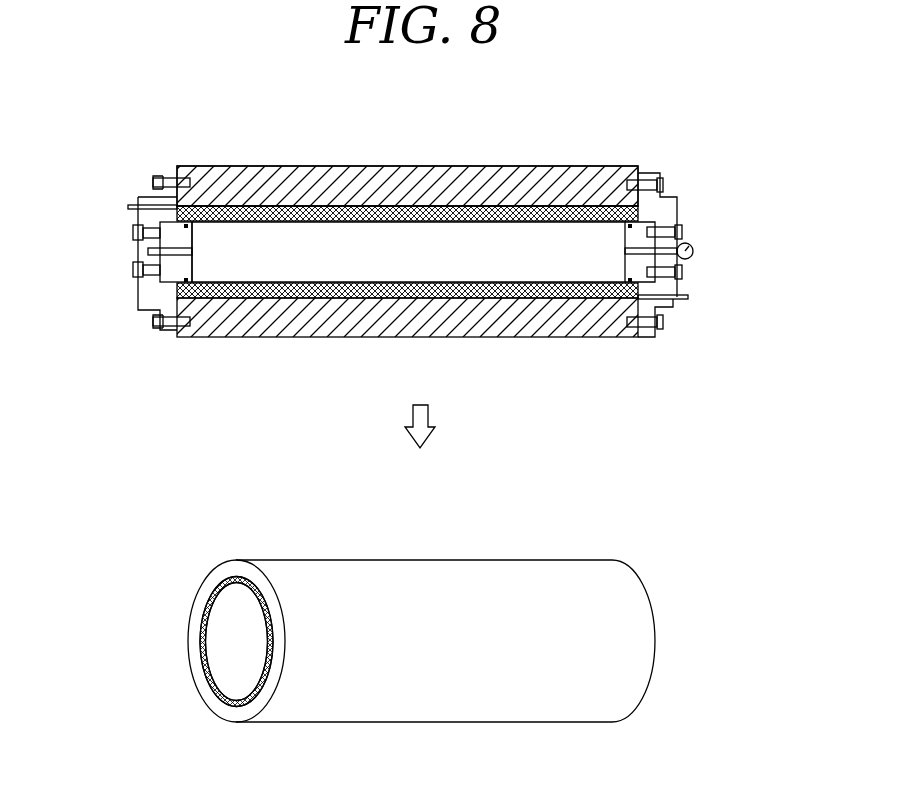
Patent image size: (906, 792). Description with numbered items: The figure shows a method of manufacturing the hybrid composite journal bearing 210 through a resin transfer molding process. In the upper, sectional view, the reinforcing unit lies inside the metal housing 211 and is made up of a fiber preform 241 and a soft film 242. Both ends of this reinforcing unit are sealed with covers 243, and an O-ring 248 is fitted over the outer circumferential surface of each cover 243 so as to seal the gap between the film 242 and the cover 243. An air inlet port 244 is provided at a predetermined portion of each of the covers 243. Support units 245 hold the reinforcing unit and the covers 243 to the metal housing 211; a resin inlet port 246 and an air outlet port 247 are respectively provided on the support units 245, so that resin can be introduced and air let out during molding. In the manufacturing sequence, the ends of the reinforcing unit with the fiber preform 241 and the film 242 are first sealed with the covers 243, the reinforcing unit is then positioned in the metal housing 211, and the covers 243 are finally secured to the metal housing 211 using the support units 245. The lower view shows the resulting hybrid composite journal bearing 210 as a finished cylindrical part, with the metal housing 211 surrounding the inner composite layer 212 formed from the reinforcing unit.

The hybrid composite journal bearing 210 is at (208, 566).
The metal housing 211 is at (525, 182).
The inner coating layer 212 is at (242, 578).
The fiber preform 241 is at (247, 180).
The soft film 242 is at (403, 212).
The cover 243 is at (683, 239).
The air inlet port 244 is at (148, 252).
The support unit 245 is at (673, 178).
The resin inlet port 246 is at (135, 205).
The air outlet port 247 is at (683, 300).
The O-ring 248 is at (182, 337).